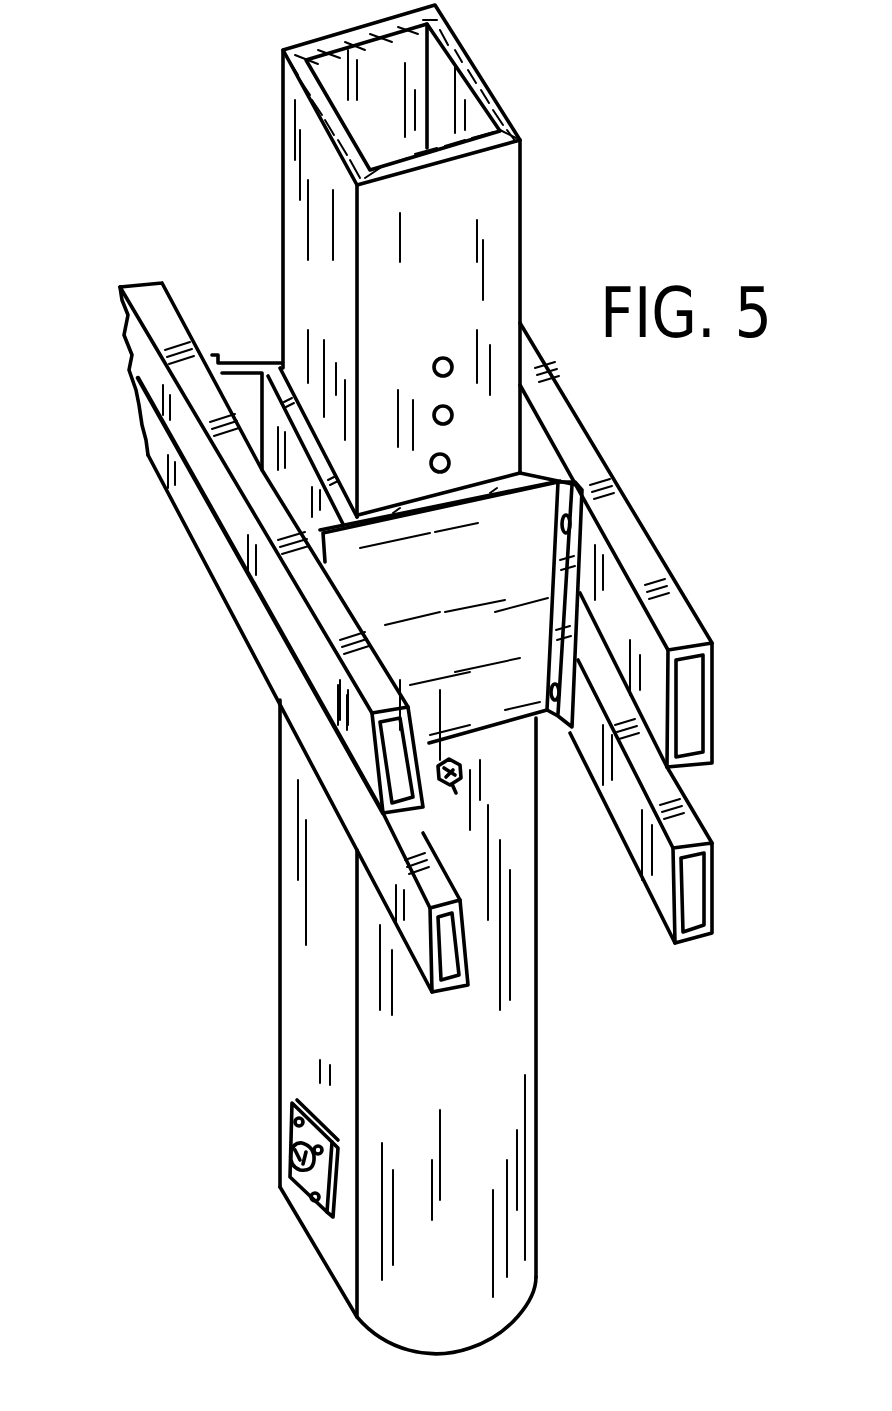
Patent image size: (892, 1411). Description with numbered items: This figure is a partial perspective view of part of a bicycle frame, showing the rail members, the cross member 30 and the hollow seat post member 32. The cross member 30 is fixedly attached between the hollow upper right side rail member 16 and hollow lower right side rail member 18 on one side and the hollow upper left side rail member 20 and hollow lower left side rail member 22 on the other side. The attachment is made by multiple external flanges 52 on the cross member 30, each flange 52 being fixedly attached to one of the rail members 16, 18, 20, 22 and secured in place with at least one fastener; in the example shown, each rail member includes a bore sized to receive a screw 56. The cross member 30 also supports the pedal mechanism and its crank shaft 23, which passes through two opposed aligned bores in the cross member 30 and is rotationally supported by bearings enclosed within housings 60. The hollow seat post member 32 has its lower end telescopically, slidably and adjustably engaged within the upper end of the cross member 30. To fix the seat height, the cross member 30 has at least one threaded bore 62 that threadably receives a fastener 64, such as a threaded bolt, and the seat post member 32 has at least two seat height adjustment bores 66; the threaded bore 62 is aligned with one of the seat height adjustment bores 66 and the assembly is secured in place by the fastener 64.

The hollow upper right side rail member 16 is at (130, 332).
The hollow lower right side rail member 18 is at (145, 433).
The hollow upper left side rail member 20 is at (740, 697).
The hollow lower left side rail member 22 is at (713, 915).
The crank shaft 23 is at (293, 1178).
The cross member 30 is at (522, 1066).
The hollow seat post member 32 is at (500, 200).
The external flange 52 is at (225, 362).
The screw 56 is at (580, 518).
The housing 60 is at (305, 1103).
The threaded bore 62 is at (452, 758).
The fastener 64 is at (458, 792).
The seat height adjustment bore 66 is at (452, 372).